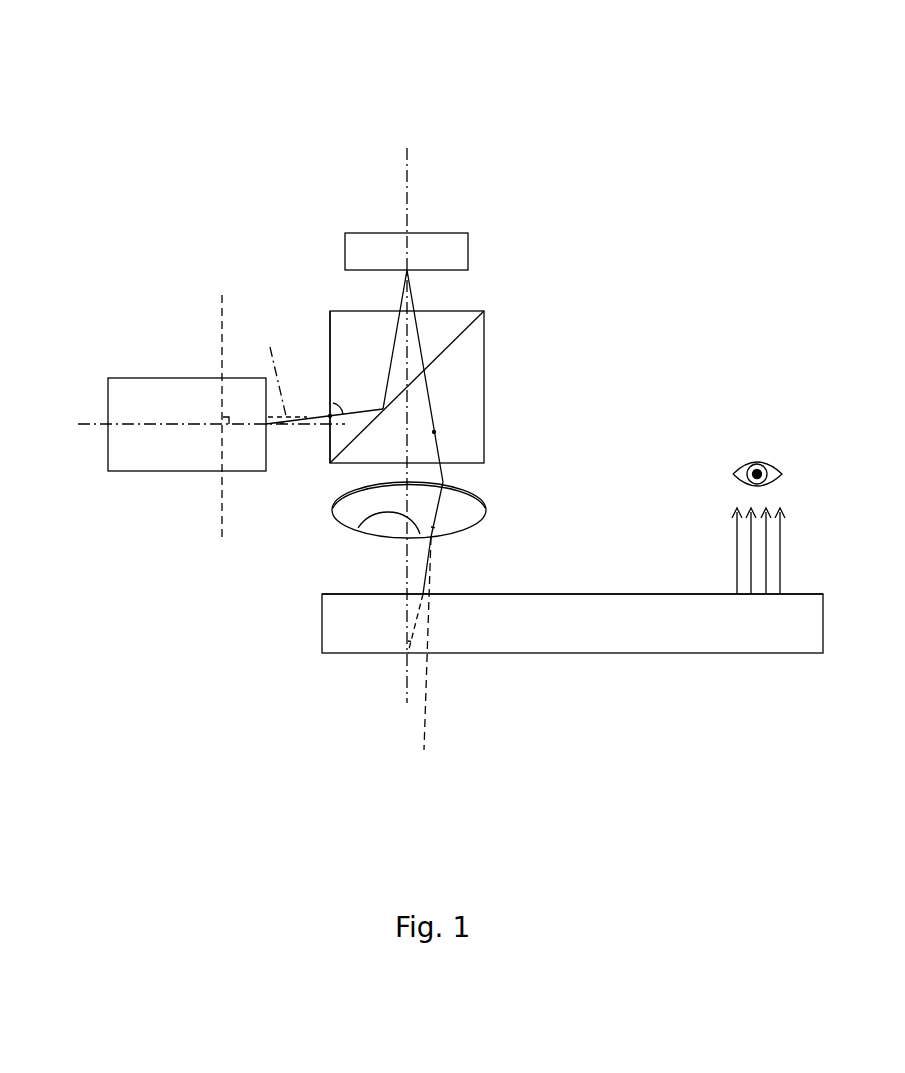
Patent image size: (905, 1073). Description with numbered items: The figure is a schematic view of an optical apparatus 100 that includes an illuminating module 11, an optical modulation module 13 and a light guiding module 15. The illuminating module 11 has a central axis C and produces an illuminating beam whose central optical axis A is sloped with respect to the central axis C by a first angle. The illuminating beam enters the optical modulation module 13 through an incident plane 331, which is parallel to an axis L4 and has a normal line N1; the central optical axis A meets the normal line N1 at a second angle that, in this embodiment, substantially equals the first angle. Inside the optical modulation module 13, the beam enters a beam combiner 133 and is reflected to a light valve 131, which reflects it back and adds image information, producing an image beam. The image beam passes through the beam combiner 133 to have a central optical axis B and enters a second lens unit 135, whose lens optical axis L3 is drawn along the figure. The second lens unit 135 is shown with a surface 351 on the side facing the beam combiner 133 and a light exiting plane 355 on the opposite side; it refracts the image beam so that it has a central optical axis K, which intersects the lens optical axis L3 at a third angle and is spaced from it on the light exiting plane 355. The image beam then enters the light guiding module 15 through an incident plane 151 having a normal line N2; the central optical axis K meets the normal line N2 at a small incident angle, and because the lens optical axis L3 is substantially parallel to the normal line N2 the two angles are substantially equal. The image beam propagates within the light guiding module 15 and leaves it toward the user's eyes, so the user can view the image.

The optical apparatus 100 is at (210, 58).
The illuminating module 11 is at (168, 397).
The optical modulation module 13 is at (518, 376).
The light valve 131 is at (455, 243).
The beam combiner 133 is at (458, 372).
The incident plane 331 is at (330, 312).
The second lens unit 135 is at (467, 508).
The first lens surface 351 is at (465, 490).
The light exiting plane 355 is at (358, 528).
The light guiding module 15 is at (572, 606).
The incident plane 151 is at (567, 594).
The lens optical axis L3 is at (409, 187).
The axis L4 is at (221, 525).
The central axis C is at (82, 422).
The normal line N1 is at (267, 367).
The normal line N2 is at (437, 688).
The central optical axis A is at (329, 424).
The central optical axis B is at (434, 432).
The central optical axis K is at (427, 573).